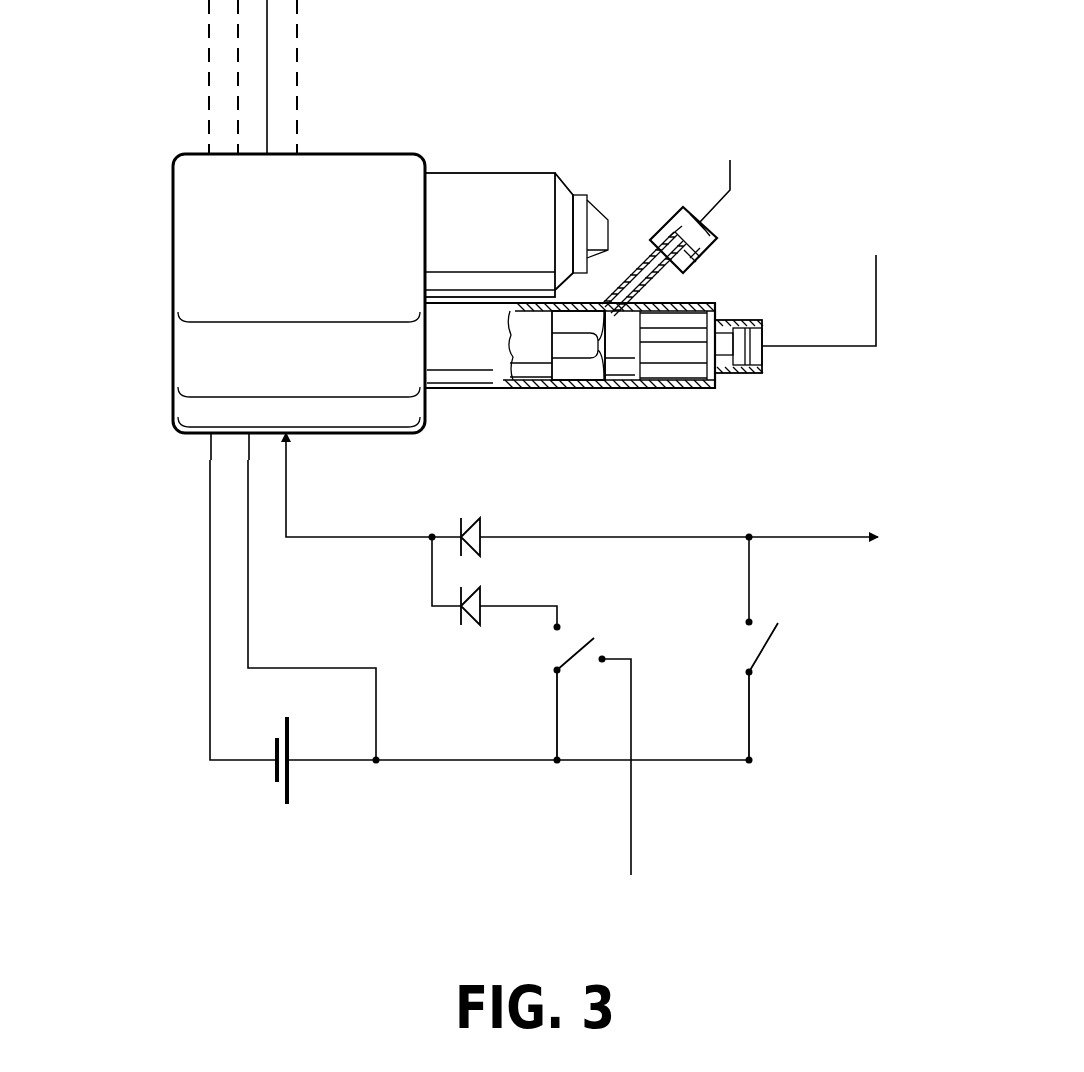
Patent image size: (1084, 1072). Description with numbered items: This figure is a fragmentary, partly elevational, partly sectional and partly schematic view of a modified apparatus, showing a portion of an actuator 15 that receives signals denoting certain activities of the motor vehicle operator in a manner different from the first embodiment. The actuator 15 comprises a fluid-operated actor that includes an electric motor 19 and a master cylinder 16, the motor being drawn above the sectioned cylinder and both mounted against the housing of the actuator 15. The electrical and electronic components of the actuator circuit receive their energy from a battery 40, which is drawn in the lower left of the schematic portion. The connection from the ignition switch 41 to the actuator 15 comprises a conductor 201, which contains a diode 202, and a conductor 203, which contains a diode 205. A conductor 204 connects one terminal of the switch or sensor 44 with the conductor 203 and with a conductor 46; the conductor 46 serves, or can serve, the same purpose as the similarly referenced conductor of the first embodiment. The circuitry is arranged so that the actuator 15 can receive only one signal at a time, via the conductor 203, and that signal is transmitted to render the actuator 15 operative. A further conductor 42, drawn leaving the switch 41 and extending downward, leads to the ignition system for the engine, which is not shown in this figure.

The actuator 15 is at (172, 275).
The master cylinder 16 is at (662, 396).
The electric motor 19 is at (480, 183).
The battery 40 is at (275, 793).
The ignition switch 41 is at (565, 645).
The conductor 42 is at (631, 806).
The switch (sensor) 44 is at (750, 640).
The conductor 46 is at (790, 535).
The conductor 201 is at (515, 606).
The diode 202 is at (470, 620).
The conductor 203 is at (358, 535).
The conductor 204 is at (600, 535).
The diode 205 is at (478, 532).